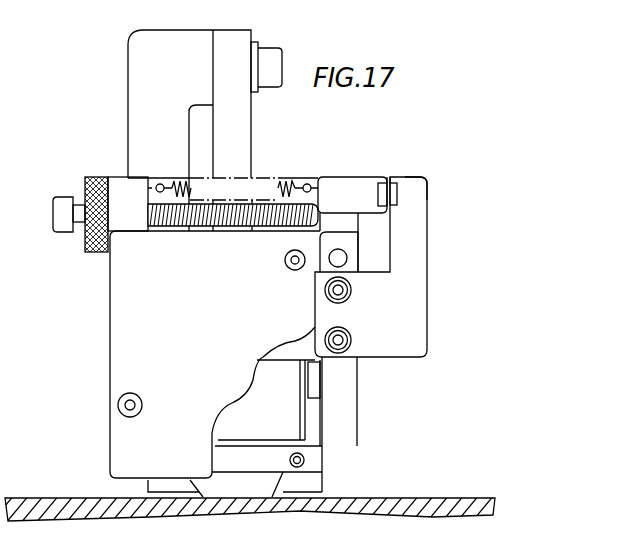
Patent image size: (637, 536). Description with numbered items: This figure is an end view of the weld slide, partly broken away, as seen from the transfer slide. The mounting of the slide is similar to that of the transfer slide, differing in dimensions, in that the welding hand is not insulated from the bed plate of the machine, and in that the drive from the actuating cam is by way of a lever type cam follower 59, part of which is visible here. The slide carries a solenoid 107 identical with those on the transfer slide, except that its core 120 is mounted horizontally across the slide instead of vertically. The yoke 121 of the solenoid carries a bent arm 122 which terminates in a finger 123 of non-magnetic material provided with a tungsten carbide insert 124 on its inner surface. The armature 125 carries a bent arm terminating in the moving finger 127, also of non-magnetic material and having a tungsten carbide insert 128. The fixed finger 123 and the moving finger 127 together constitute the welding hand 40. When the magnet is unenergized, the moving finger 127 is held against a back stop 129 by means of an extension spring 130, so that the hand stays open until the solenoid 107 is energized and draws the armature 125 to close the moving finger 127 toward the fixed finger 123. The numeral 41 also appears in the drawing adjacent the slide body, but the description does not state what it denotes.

The lever type cam follower 59 is at (237, 117).
The yoke 121 is at (135, 187).
The extension spring 130 is at (287, 176).
The back stop 129 is at (313, 210).
The carriage assembly 41 is at (106, 409).
The solenoid 107 is at (275, 419).
The core 120 is at (312, 398).
The armature 125 is at (347, 390).
The bent arm 122 is at (408, 230).
The finger 123 is at (425, 185).
The moving finger 127 is at (327, 176).
The tungsten carbide insert 128 is at (380, 188).
The tungsten carbide insert 124 is at (415, 190).
The welding hand 40 is at (390, 176).